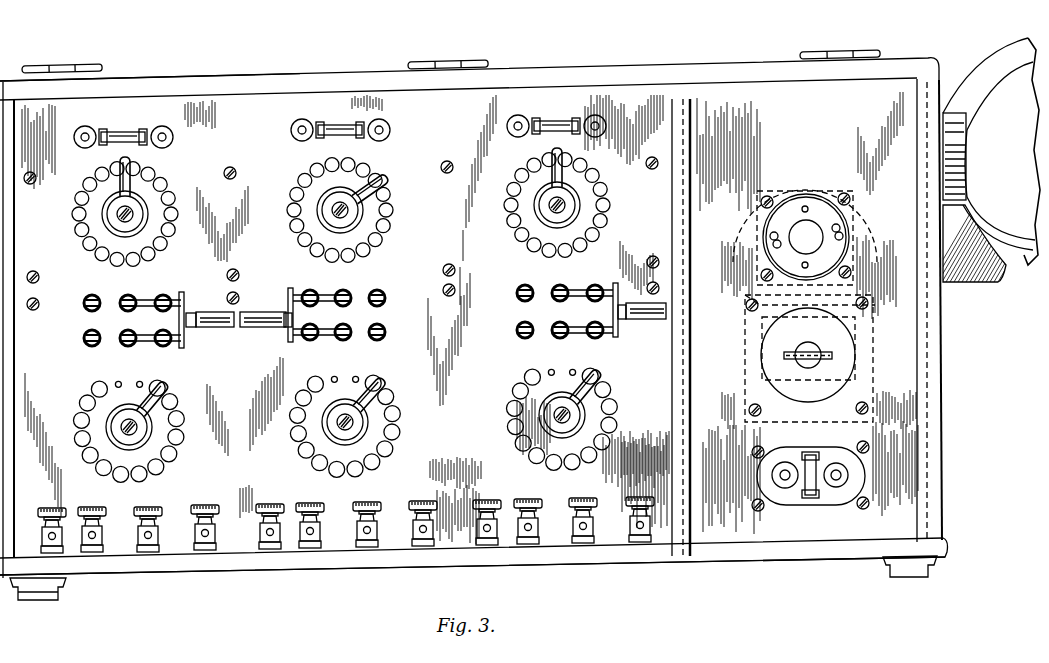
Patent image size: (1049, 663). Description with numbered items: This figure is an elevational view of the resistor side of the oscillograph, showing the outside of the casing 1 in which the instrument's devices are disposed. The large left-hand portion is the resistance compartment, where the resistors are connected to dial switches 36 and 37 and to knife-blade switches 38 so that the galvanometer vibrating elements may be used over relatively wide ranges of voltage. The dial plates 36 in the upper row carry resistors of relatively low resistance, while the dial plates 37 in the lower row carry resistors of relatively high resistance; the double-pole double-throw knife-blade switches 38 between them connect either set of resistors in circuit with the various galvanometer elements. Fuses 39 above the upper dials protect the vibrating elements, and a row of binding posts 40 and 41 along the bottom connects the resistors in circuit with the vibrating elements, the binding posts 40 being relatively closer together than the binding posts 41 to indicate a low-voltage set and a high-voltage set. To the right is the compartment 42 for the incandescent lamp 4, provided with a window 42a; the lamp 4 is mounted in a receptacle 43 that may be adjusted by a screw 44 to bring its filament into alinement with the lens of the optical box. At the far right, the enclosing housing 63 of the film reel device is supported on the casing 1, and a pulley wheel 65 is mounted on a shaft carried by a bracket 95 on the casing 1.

The casing 1 is at (709, 42).
The incandescent lamp 4 is at (778, 176).
The dial switches 36 is at (174, 224).
The dial switches 37 is at (184, 440).
The knife-blade switches 38 is at (84, 344).
The fuses 39 is at (125, 132).
The binding posts 40 is at (72, 548).
The binding posts 41 is at (182, 548).
The lamp compartment 42 is at (776, 96).
The window 42a is at (812, 223).
The receptacle 43 is at (868, 296).
The screw 44 is at (822, 358).
The enclosing housing 63 is at (1035, 243).
The pulley wheel 65 is at (990, 63).
The bracket 95 is at (949, 282).